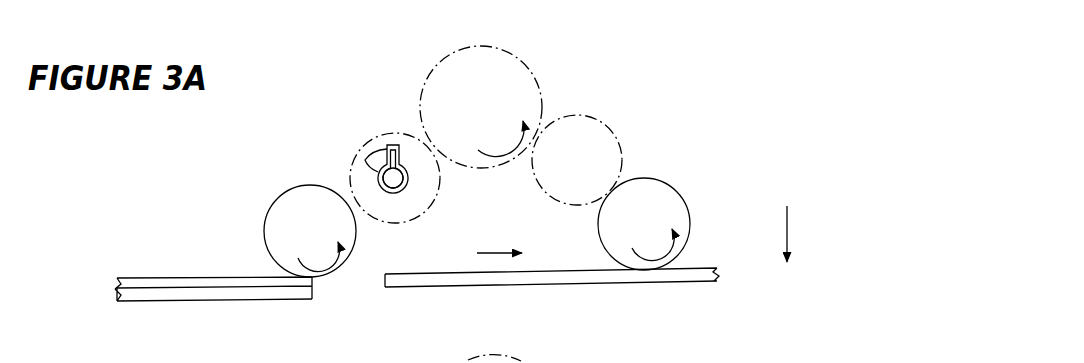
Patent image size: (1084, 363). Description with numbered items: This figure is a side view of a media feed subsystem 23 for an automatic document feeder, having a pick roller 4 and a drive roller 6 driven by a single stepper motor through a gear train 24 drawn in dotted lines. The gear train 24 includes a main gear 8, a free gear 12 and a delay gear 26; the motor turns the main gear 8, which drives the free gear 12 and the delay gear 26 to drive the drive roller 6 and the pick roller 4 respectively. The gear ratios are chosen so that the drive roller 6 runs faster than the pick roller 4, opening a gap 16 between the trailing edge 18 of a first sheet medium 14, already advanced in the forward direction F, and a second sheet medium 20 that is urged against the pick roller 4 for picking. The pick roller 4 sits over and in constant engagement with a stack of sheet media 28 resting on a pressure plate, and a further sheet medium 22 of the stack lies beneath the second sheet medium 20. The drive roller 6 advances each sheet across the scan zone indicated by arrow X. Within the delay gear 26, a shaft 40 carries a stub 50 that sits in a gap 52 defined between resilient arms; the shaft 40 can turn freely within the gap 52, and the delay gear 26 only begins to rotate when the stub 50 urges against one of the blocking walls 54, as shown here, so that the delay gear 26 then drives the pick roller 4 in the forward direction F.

The pick roller 4 is at (293, 203).
The drive roller 6 is at (672, 206).
The main gear 8 is at (492, 54).
The free gear 12 is at (598, 128).
The first sheet medium 14 is at (567, 278).
The gap 16 is at (350, 289).
The trailing edge 18 is at (379, 277).
The second sheet medium 20 is at (205, 283).
The second web layer 22 is at (230, 295).
The media feed subsystem 23 is at (649, 17).
The gear train 24 is at (573, 79).
The delay gear 26 is at (346, 166).
The stack of sheet media 28 is at (158, 268).
The shaft 40 is at (397, 179).
The stub 50 is at (391, 145).
The gap 52 is at (383, 152).
The blocking walls 54 is at (405, 154).
The forward direction F is at (510, 253).
The scan zone X is at (787, 221).